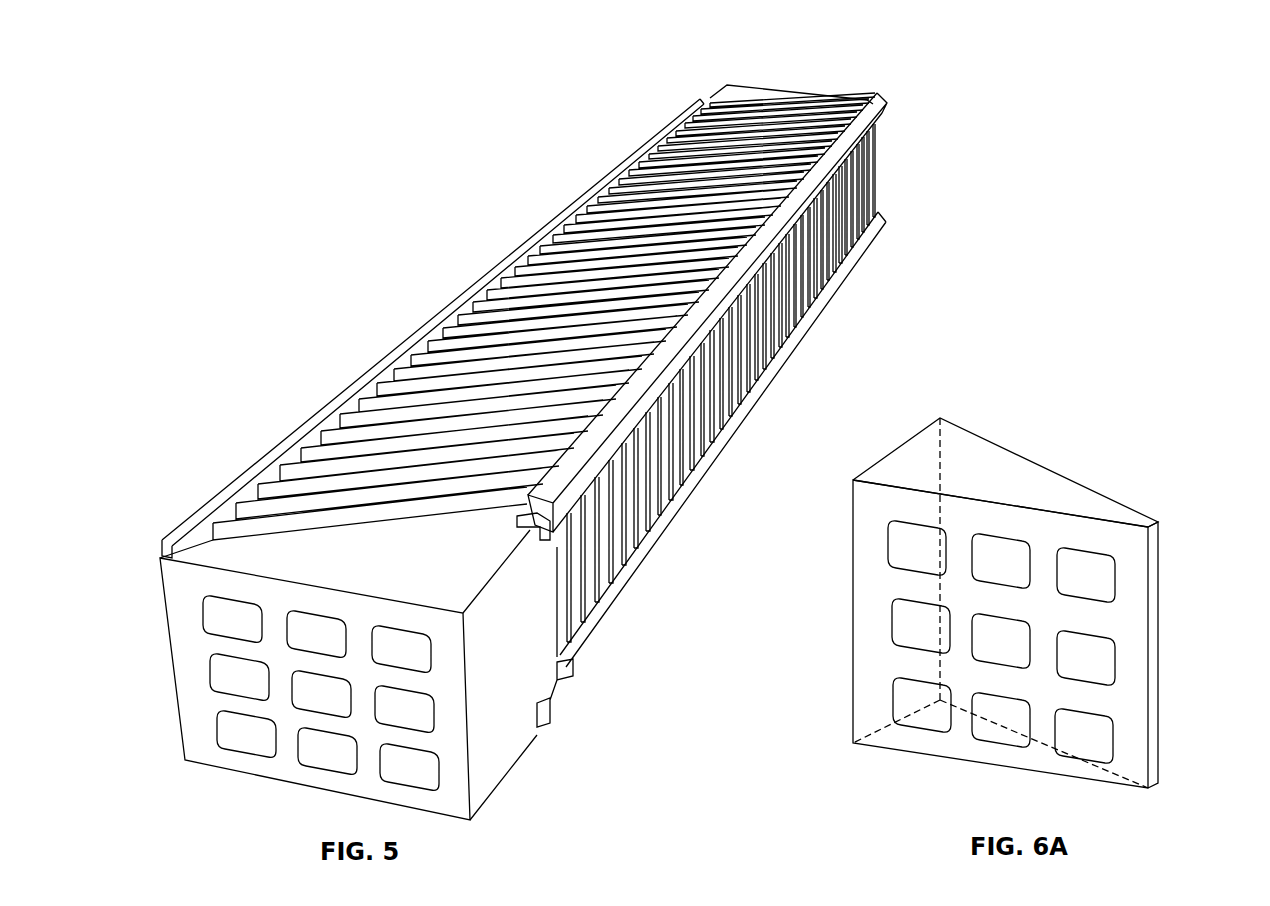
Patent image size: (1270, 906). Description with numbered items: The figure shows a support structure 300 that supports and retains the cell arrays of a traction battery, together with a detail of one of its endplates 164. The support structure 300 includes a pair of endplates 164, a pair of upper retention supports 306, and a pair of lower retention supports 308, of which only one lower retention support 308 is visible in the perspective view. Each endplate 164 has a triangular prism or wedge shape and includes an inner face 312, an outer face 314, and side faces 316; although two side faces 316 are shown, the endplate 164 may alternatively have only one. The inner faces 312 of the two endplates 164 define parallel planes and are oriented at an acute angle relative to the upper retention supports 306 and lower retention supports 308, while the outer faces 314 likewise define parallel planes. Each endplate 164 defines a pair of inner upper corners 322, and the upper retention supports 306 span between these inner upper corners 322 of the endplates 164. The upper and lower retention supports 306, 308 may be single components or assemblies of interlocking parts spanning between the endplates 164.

In FIG. 5, the support structure 300 is at (211, 102).
In FIG. 5, the endplate 164 is at (172, 660).
In FIG. 6A, the endplate 164 is at (1042, 443).
In FIG. 5, the upper retention support 306 is at (170, 547).
In FIG. 5, the lower retention support 308 is at (672, 516).
In FIG. 6A, the inner face 312 is at (1055, 486).
In FIG. 6A, the outer face 314 is at (863, 585).
In FIG. 6A, the side face 316 is at (880, 522).
In FIG. 6A, the inner upper corner 322 is at (941, 417).